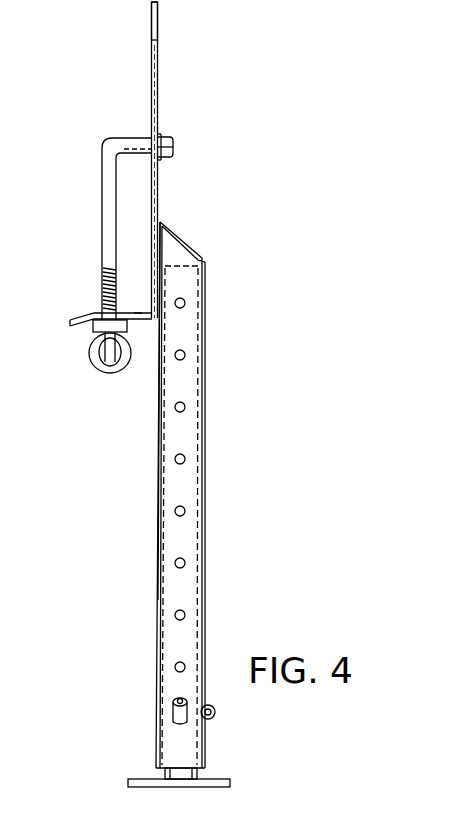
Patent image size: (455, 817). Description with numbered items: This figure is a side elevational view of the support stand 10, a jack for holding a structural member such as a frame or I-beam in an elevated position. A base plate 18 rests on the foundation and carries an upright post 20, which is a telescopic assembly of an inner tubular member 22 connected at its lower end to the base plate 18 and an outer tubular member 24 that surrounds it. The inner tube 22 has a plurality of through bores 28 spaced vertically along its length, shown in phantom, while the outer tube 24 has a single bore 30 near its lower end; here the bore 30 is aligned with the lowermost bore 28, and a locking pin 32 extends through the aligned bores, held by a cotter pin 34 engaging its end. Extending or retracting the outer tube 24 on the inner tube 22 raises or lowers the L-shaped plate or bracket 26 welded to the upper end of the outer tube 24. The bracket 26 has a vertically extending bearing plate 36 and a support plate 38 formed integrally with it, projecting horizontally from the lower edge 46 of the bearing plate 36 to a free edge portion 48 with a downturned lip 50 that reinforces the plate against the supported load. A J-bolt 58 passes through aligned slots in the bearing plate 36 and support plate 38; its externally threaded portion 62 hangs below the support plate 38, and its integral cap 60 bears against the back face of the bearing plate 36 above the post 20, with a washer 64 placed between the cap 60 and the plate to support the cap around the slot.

The support stand 10 is at (238, 148).
The base plate 18 is at (143, 778).
The upright post 20 is at (130, 477).
The inner tubular member 22 is at (197, 776).
The outer tubular member 24 is at (157, 590).
The L-shaped plate or bracket 26 is at (140, 97).
The through bores 28 is at (185, 355).
The bore 30 is at (177, 739).
The locking pin 32 is at (183, 700).
The cotter pin 34 is at (214, 712).
The bearing plate 36 is at (151, 44).
The support plate 38 is at (96, 313).
The lower edge 46 is at (139, 312).
The free edge portion 48 is at (70, 321).
The downturned lip 50 is at (80, 325).
The J-bolt 58 is at (108, 178).
The cap 60 is at (173, 141).
The externally threaded portion 62 is at (106, 268).
The washer 64 is at (160, 158).